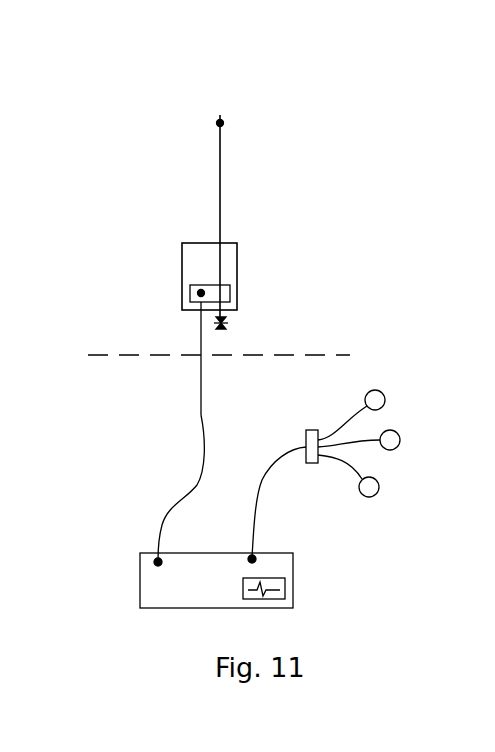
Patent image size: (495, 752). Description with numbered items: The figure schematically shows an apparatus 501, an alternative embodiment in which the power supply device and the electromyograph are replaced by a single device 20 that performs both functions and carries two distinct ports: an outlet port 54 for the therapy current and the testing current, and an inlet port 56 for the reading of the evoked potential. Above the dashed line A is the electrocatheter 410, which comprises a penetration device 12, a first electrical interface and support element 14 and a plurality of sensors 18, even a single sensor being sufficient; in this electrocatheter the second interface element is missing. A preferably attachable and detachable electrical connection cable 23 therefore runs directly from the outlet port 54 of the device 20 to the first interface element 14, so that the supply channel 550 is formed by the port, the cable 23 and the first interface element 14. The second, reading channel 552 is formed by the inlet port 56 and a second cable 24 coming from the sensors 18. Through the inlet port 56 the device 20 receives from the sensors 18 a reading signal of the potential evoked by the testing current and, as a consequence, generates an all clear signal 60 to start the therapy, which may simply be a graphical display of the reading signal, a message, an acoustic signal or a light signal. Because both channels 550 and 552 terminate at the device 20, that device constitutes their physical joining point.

The apparatus 501 is at (88, 127).
The electrocatheter 410 is at (112, 232).
The penetration device 12 is at (218, 180).
The first electrical interface and support element 14 is at (181, 277).
The dashed line A is at (125, 356).
The supply channel 550 is at (180, 405).
The electrical connection cable 23 is at (197, 480).
The reading channel 552 is at (264, 458).
The electrical connection cable 24 is at (259, 494).
The sensors 18 is at (382, 393).
The device 20 is at (138, 581).
The outlet port 54 is at (155, 561).
The inlet port 56 is at (250, 556).
The all clear signal 60 is at (278, 594).